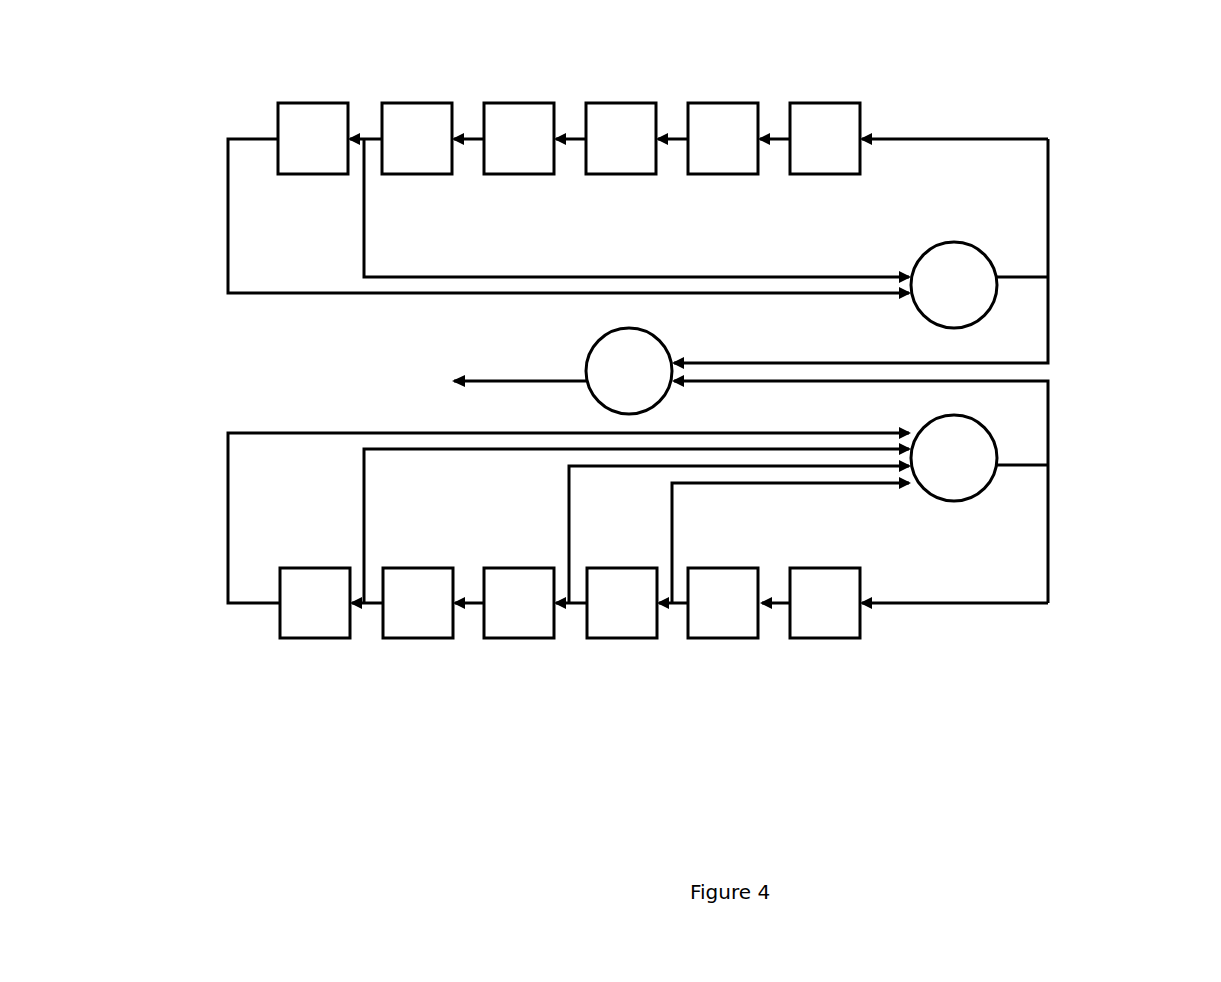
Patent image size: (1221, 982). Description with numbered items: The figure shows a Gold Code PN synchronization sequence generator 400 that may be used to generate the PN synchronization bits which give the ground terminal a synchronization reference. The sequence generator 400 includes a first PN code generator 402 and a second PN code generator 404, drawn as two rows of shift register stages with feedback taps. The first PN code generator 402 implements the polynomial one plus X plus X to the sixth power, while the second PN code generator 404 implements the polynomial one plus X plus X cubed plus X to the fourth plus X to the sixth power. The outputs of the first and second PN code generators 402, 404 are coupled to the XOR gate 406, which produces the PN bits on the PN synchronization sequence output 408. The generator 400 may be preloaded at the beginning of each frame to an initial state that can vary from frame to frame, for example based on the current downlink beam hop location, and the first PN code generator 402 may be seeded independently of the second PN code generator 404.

The Gold Code PN synchronization sequence generator 400 is at (1106, 734).
The first PN code generator 402 is at (240, 80).
The second PN code generator 404 is at (236, 682).
The XOR gate 406 is at (608, 333).
The PN synchronization sequence output 408 is at (515, 381).